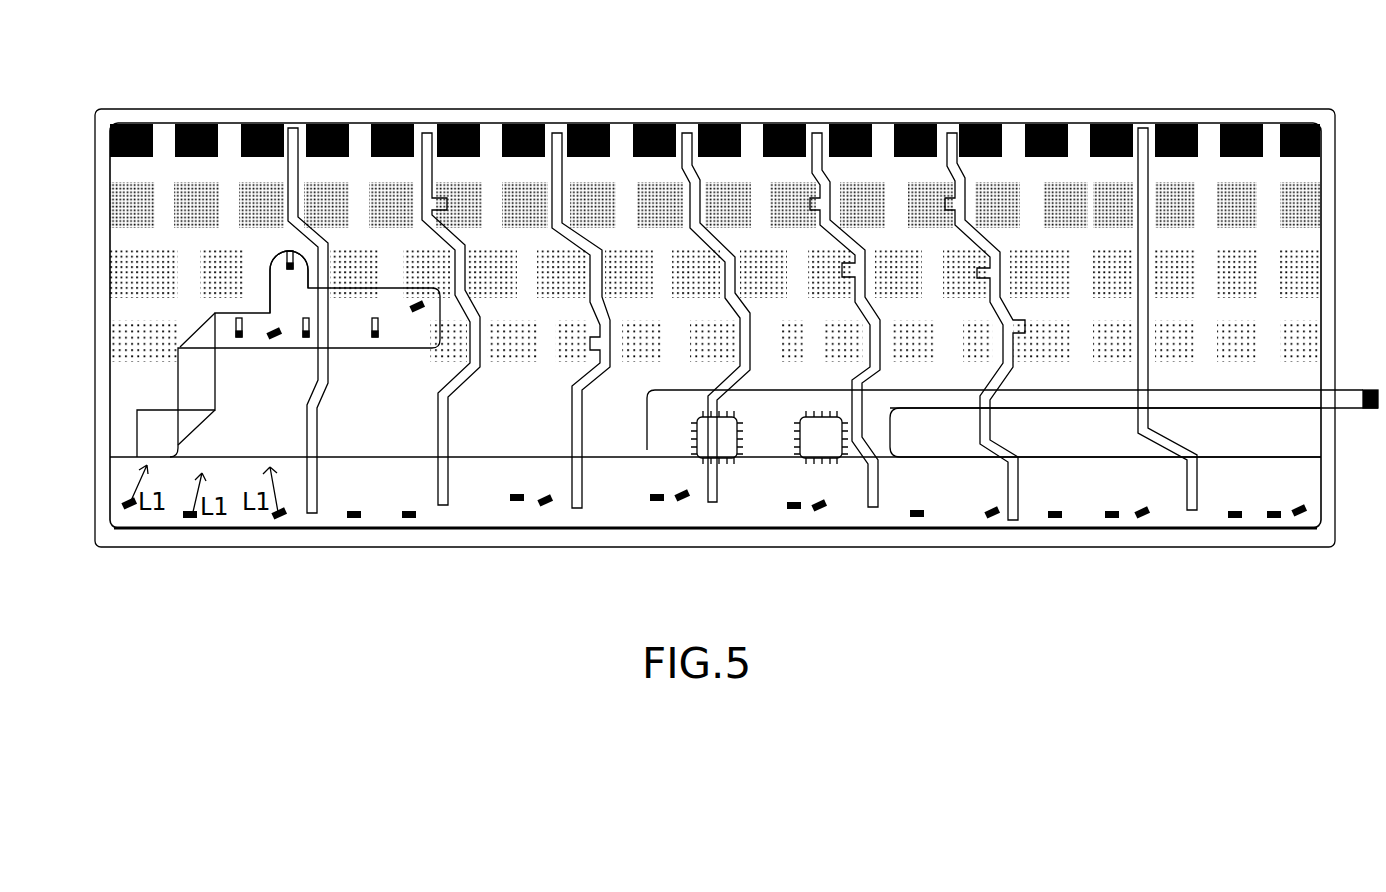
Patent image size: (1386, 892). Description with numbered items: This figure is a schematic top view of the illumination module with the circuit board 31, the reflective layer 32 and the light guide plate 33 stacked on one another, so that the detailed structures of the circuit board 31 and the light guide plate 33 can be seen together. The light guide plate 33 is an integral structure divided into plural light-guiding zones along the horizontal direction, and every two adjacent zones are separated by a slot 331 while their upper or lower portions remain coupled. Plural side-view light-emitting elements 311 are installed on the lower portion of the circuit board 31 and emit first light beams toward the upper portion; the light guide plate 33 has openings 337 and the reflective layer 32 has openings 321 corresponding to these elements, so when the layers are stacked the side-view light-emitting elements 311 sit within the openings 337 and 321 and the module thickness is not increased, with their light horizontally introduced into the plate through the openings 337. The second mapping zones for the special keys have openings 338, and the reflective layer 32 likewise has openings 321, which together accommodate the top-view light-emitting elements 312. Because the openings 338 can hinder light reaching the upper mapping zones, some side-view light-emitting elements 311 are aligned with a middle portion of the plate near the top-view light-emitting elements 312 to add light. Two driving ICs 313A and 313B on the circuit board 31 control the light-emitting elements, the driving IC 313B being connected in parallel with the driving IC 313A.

The circuit board 31 is at (1347, 408).
The reflective layer 32 is at (1138, 108).
The light guide plate 33 is at (1208, 123).
The side-view light-emitting element 311 is at (284, 334).
The top-view light-emitting element 312 is at (217, 312).
The driving IC 313A is at (722, 440).
The driving IC 313B is at (826, 440).
The opening of reflective layer 321 is at (238, 318).
The slot 331 is at (293, 158).
The opening of light guide plate 337 is at (266, 335).
The opening of second mapping zone 338 is at (162, 228).